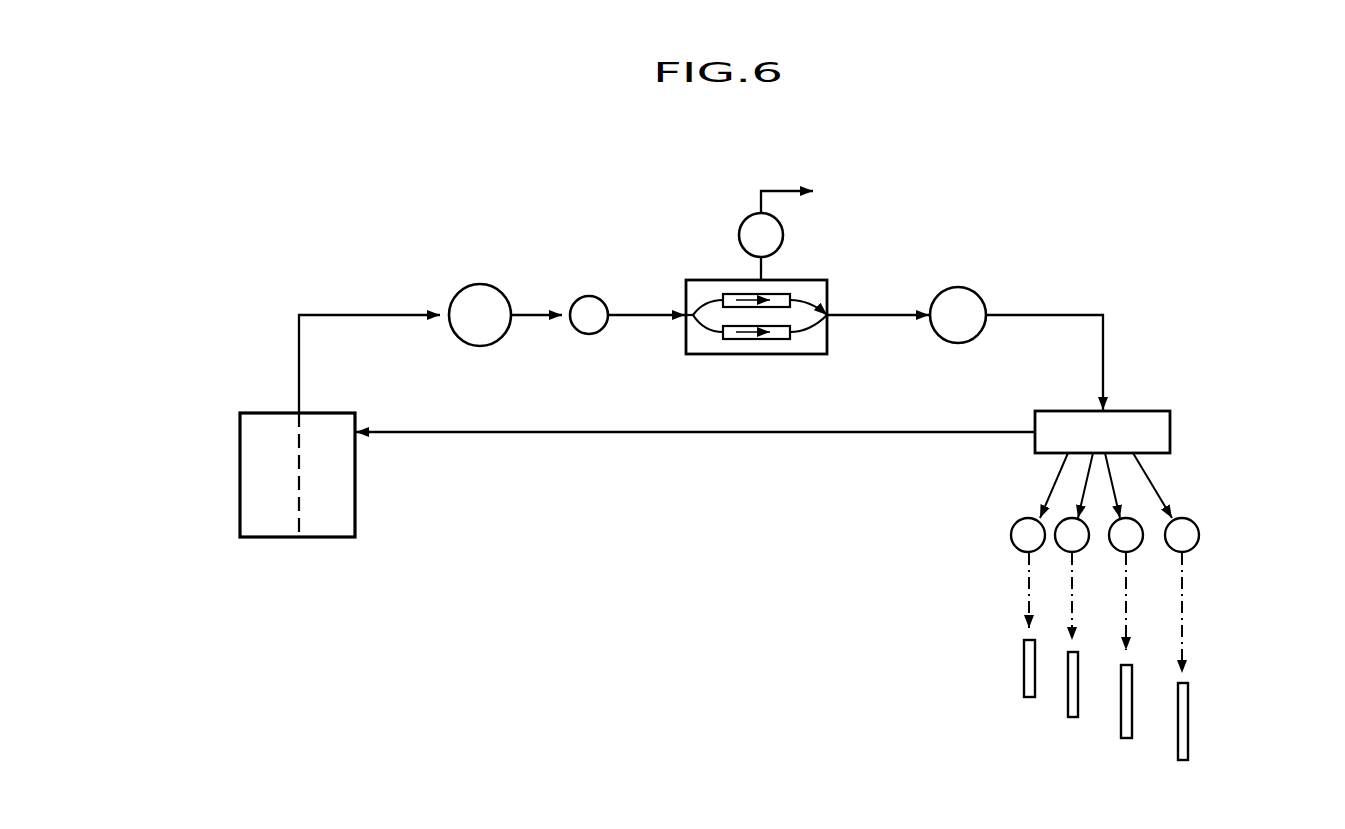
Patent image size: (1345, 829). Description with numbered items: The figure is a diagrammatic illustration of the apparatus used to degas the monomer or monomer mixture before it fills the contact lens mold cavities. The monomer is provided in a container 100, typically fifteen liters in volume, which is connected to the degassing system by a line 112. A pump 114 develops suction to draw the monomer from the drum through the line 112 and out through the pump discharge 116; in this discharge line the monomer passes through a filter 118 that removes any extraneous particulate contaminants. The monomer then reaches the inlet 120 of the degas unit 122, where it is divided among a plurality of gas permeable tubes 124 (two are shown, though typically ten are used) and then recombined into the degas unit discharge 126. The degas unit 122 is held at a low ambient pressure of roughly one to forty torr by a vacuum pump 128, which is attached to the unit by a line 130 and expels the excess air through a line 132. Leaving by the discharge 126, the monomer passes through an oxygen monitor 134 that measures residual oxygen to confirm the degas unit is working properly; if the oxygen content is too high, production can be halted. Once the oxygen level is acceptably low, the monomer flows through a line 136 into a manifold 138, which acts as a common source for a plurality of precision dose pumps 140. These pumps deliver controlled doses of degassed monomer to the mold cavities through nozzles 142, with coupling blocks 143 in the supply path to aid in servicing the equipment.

The container 100 is at (357, 497).
The line 112 is at (378, 315).
The pump 114 is at (478, 284).
The pump discharge line 116 is at (532, 318).
The filter 118 is at (589, 296).
The inlet 120 is at (645, 318).
The degas unit 122 is at (707, 354).
The tubes 124 is at (777, 294).
The degas unit discharge 126 is at (870, 318).
The vacuum pump 128 is at (781, 228).
The line 130 is at (757, 267).
The line 132 is at (783, 191).
The oxygen monitor 134 is at (962, 287).
The line 136 is at (1103, 340).
The manifold 138 is at (1170, 432).
The precision dose pumps 140 is at (1063, 518).
The nozzles 142 is at (638, 433).
The coupling blocks 143 is at (1215, 657).